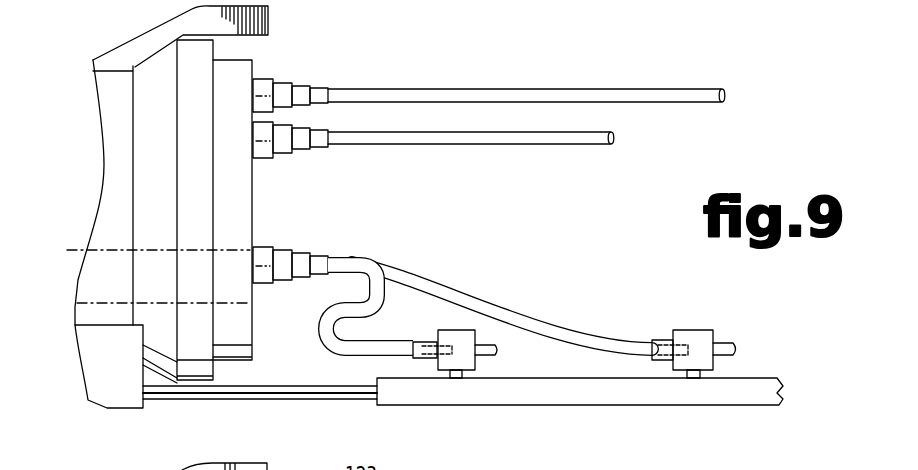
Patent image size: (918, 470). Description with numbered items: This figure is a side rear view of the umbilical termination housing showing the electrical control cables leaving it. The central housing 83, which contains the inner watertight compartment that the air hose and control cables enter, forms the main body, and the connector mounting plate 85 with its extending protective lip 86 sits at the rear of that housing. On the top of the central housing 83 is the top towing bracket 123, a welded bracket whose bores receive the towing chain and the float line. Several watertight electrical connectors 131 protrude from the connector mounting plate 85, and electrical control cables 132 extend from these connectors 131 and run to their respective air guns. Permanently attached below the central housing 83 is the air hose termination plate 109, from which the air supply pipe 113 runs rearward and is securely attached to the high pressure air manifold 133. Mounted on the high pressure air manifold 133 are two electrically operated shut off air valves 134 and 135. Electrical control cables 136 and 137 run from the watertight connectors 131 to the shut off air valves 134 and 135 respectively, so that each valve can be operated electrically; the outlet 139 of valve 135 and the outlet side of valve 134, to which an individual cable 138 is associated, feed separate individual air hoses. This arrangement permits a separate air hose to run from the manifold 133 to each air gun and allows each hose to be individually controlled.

The central housing 83 is at (110, 108).
The connector mounting plate 85 is at (187, 228).
The extending protective lip 86 is at (233, 198).
The air hose termination plate 109 is at (117, 365).
The air supply pipe 113 is at (237, 392).
The top towing bracket 123 is at (152, 38).
The watertight electrical connector 131 is at (265, 92).
The electrical control cable 132 is at (437, 90).
The high pressure air manifold 133 is at (517, 405).
The electrically operated shut off air valve 134 is at (492, 334).
The electrically operated shut off air valve 135 is at (724, 330).
The electrical control cable 136 is at (323, 322).
The electrical control cable 137 is at (453, 280).
The electrical control cable 138 is at (500, 352).
The outlet stub 139 is at (728, 342).